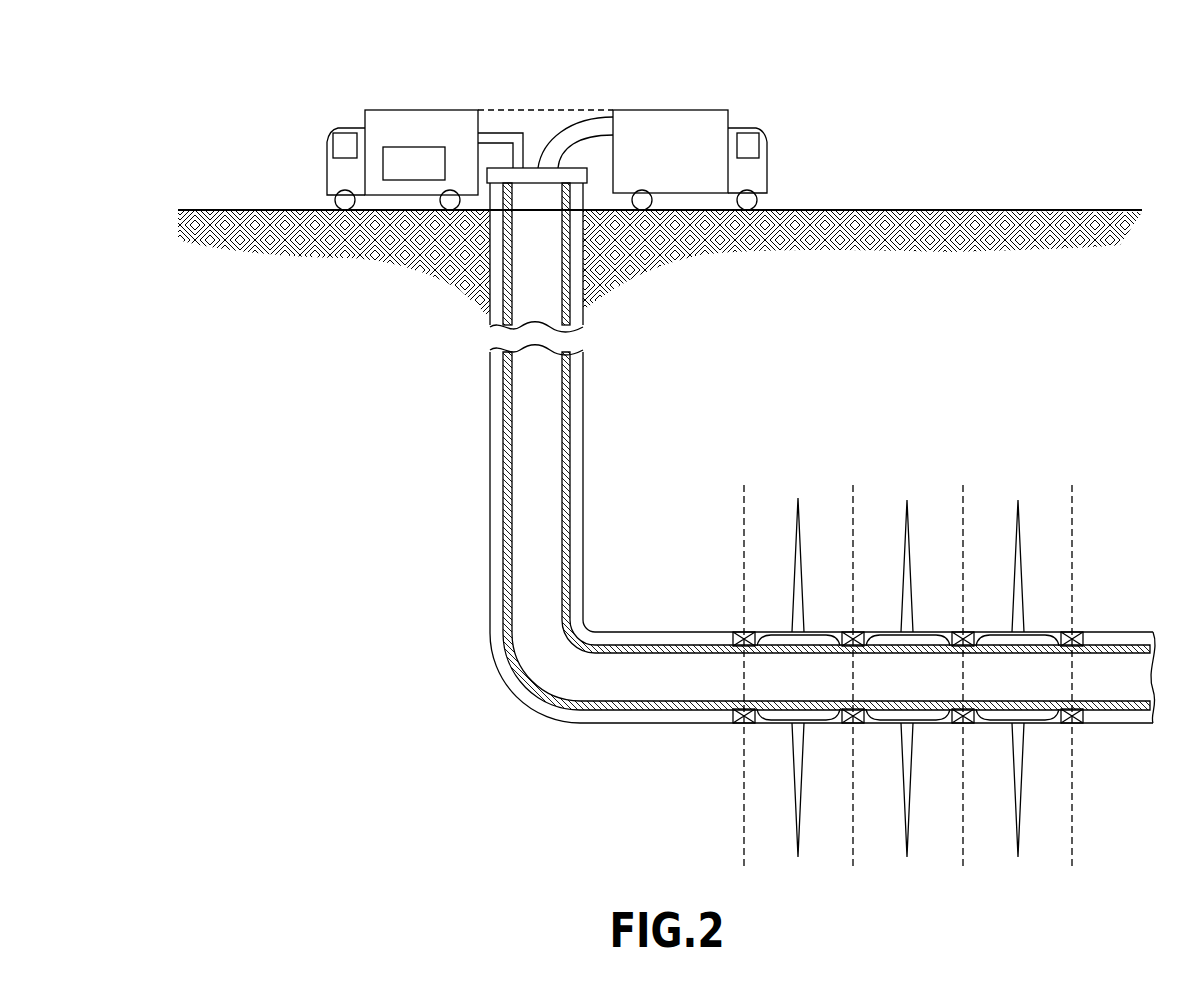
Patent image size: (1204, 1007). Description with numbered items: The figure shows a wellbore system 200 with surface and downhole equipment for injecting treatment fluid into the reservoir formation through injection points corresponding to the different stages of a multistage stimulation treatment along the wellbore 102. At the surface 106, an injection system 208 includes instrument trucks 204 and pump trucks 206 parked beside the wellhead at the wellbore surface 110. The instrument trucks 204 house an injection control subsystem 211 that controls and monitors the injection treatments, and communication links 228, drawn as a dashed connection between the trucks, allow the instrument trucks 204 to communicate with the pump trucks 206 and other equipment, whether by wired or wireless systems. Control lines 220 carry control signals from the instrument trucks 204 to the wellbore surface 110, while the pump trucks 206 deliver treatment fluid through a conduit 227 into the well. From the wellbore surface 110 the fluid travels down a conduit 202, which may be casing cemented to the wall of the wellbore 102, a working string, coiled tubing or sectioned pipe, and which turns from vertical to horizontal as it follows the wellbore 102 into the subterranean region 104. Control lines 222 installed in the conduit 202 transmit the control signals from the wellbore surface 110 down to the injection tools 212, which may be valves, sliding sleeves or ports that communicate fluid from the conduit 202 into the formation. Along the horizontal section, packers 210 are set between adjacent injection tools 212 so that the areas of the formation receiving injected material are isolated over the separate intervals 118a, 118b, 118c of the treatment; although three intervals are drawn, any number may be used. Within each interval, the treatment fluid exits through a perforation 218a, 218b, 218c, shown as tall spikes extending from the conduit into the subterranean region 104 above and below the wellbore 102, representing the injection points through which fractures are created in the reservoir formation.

The wellbore 102 is at (497, 538).
The subterranean region 104 is at (965, 400).
The surface 106 is at (920, 209).
The wellbore surface 110 is at (533, 167).
The first interval 118a is at (825, 474).
The second interval 118b is at (935, 474).
The third interval 118c is at (1045, 474).
The wellbore system 200 is at (440, 693).
The conduit 202 is at (503, 505).
The instrument trucks 204 is at (435, 139).
The pump trucks 206 is at (651, 164).
The injection system 208 is at (325, 92).
The packers 210 is at (738, 632).
The injection control subsystem 211 is at (414, 163).
The injection tools 212 is at (785, 632).
The perforation 218a is at (797, 527).
The perforation 218b is at (907, 523).
The perforation 218c is at (1020, 537).
The control lines 220 is at (500, 133).
The control lines 222 is at (503, 590).
The conduit 227 is at (586, 120).
The communication links 228 is at (487, 110).